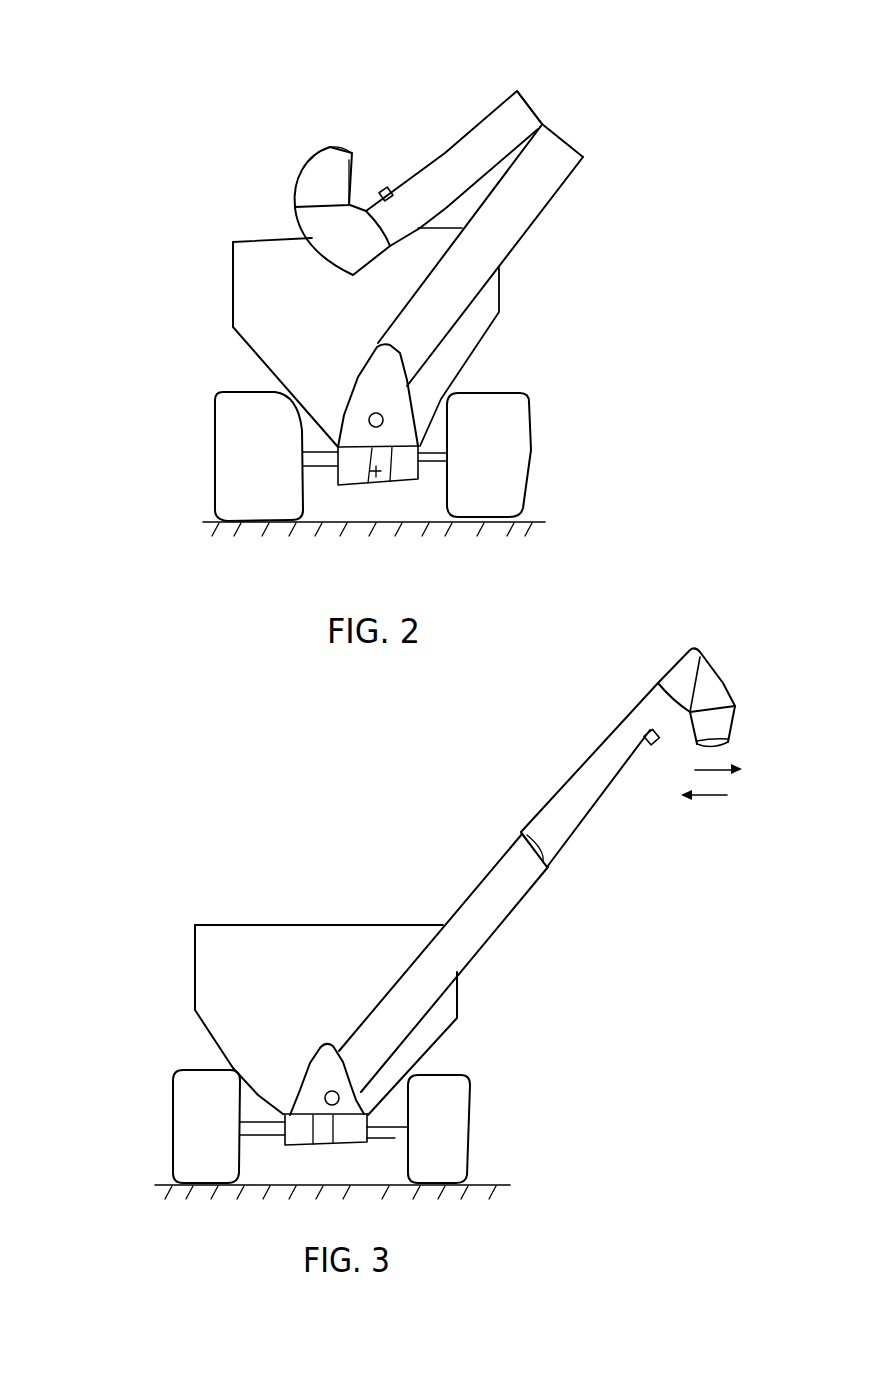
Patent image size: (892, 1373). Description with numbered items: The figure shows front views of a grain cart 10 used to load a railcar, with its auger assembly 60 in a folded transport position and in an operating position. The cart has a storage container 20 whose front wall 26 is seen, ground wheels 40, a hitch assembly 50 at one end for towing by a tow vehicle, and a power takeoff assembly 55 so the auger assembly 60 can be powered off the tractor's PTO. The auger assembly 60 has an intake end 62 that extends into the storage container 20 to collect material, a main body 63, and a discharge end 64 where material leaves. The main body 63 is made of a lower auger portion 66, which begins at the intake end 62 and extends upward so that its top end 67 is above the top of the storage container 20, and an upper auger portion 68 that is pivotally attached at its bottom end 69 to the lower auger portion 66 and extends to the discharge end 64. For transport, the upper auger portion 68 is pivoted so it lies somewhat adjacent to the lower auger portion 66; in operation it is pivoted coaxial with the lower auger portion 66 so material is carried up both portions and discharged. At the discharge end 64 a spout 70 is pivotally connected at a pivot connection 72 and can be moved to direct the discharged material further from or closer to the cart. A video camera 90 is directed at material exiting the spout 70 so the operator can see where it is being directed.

In FIG. 2, the grain cart 10 is at (189, 176).
In FIG. 3, the grain cart 10 is at (176, 845).
In FIG. 2, the storage container 20 is at (223, 303).
In FIG. 3, the storage container 20 is at (193, 995).
In FIG. 2, the front wall 26 is at (275, 315).
In FIG. 3, the front wall 26 is at (240, 997).
In FIG. 2, the ground wheels 40 is at (210, 460).
In FIG. 3, the ground wheels 40 is at (173, 1130).
In FIG. 2, the hitch assembly 50 is at (372, 470).
In FIG. 3, the hitch assembly 50 is at (322, 1127).
In FIG. 2, the power takeoff (PTO) assembly 55 is at (385, 421).
In FIG. 3, the power takeoff (PTO) assembly 55 is at (338, 1100).
In FIG. 2, the auger assembly 60 is at (627, 179).
In FIG. 3, the auger assembly 60 is at (531, 744).
In FIG. 2, the intake end 62 is at (410, 362).
In FIG. 3, the intake end 62 is at (348, 1048).
In FIG. 2, the main body 63 is at (523, 250).
In FIG. 3, the main body 63 is at (535, 912).
In FIG. 2, the discharge end 64 is at (313, 133).
In FIG. 3, the discharge end 64 is at (737, 668).
In FIG. 2, the lower auger portion 66 is at (513, 222).
In FIG. 3, the lower auger portion 66 is at (480, 927).
In FIG. 2, the top end 67 is at (572, 140).
In FIG. 3, the top end 67 is at (543, 865).
In FIG. 2, the upper auger portion 68 is at (458, 148).
In FIG. 3, the upper auger portion 68 is at (593, 778).
In FIG. 2, the bottom end 69 is at (532, 107).
In FIG. 3, the bottom end 69 is at (527, 833).
In FIG. 2, the spout 70 is at (305, 165).
In FIG. 3, the spout 70 is at (727, 725).
In FIG. 2, the pivot connection 72 is at (350, 205).
In FIG. 3, the pivot connection 72 is at (703, 655).
In FIG. 2, the video camera 90 is at (389, 186).
In FIG. 3, the video camera 90 is at (648, 730).